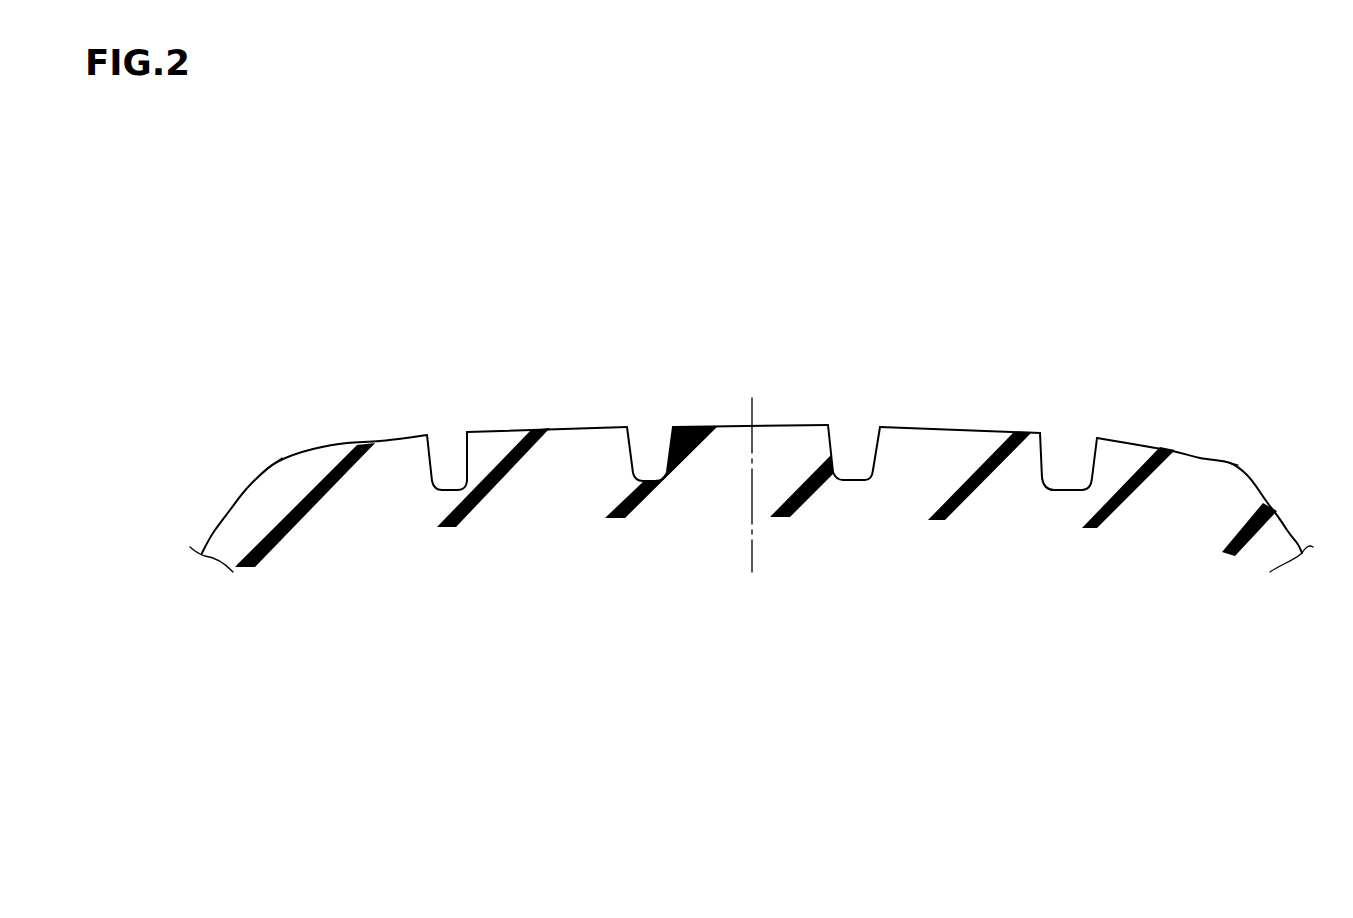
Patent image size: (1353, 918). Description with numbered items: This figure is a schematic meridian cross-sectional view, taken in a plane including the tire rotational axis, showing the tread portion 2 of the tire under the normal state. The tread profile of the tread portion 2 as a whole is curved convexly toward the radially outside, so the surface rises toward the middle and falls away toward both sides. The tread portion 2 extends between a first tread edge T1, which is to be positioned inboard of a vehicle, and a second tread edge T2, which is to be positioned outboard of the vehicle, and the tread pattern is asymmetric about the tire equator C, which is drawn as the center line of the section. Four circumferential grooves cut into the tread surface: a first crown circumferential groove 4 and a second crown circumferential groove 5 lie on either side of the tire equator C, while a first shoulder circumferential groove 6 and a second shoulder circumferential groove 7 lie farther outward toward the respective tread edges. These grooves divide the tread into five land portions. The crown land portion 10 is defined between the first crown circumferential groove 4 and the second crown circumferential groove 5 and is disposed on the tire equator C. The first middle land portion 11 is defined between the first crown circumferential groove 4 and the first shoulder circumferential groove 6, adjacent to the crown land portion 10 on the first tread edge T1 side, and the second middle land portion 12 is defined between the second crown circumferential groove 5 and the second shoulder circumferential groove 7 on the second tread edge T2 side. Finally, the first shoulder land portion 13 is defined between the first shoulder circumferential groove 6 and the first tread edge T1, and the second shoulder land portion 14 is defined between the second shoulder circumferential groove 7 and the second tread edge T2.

The tread portion 2 is at (1037, 333).
The first crown circumferential groove 4 is at (853, 450).
The second crown circumferential groove 5 is at (651, 449).
The first shoulder circumferential groove 6 is at (1068, 463).
The second shoulder circumferential groove 7 is at (447, 455).
The crown land portion 10 is at (724, 427).
The first middle land portion 11 is at (962, 428).
The second middle land portion 12 is at (552, 428).
The first shoulder land portion 13 is at (1140, 440).
The second shoulder land portion 14 is at (383, 438).
The tire equator C is at (753, 469).
The first tread edge T1 is at (1237, 460).
The second tread edge T2 is at (275, 463).